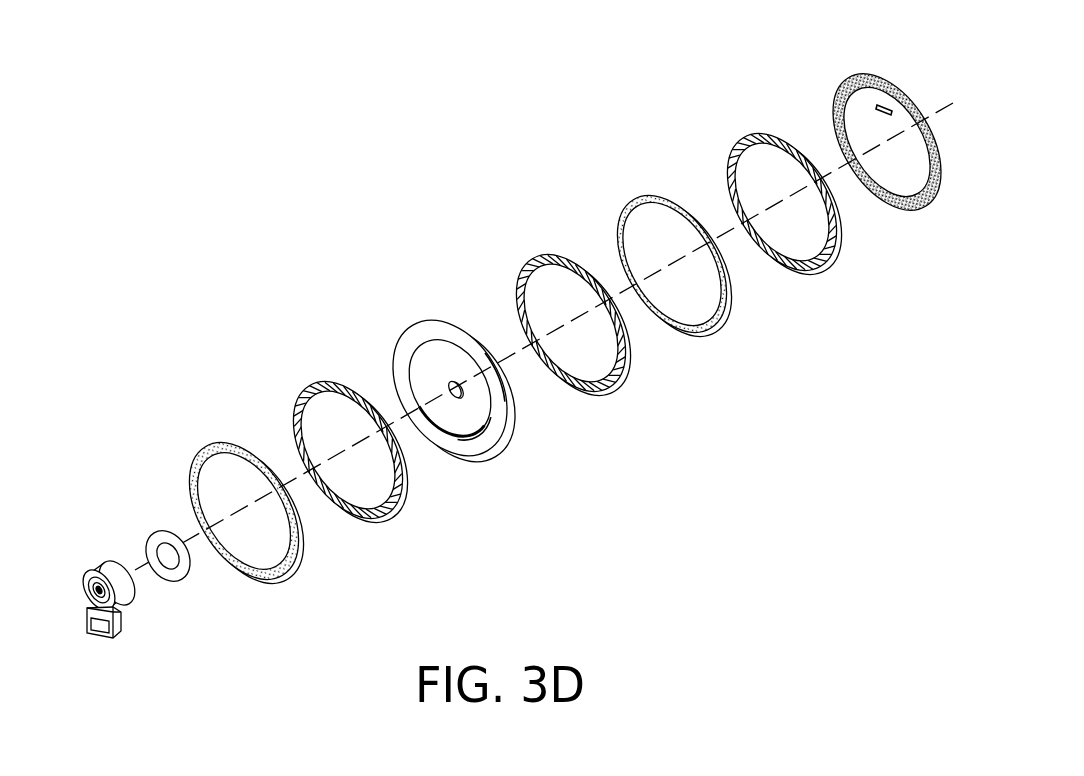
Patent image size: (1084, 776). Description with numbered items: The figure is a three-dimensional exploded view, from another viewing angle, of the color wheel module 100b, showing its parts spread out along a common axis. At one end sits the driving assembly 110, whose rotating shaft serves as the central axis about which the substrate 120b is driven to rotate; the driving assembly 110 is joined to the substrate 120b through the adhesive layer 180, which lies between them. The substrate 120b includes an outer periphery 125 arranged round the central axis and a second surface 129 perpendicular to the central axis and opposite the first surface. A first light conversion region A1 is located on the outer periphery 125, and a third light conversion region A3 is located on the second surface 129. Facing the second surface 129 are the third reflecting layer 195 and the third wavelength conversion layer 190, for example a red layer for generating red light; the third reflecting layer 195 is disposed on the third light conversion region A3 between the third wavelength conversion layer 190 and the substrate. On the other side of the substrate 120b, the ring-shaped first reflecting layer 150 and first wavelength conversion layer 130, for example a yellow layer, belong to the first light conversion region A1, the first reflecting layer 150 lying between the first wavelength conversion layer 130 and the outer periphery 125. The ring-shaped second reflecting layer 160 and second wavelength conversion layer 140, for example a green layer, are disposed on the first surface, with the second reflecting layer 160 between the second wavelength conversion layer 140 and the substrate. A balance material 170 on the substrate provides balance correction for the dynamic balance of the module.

The color wheel module 100b is at (518, 326).
The driving assembly 110 is at (108, 564).
The substrate 120b is at (455, 373).
The outer periphery 125 is at (452, 328).
The second surface 129 is at (467, 273).
The first wavelength conversion layer 130 is at (663, 193).
The second wavelength conversion layer 140 is at (857, 76).
The first reflecting layer 150 is at (552, 256).
The second reflecting layer 160 is at (748, 139).
The balance material 170 is at (878, 111).
The adhesive layer 180 is at (157, 538).
The third wavelength conversion layer 190 is at (213, 447).
The third reflecting layer 195 is at (317, 395).
The first light conversion region A1 is at (507, 417).
The third light conversion region A3 is at (468, 449).